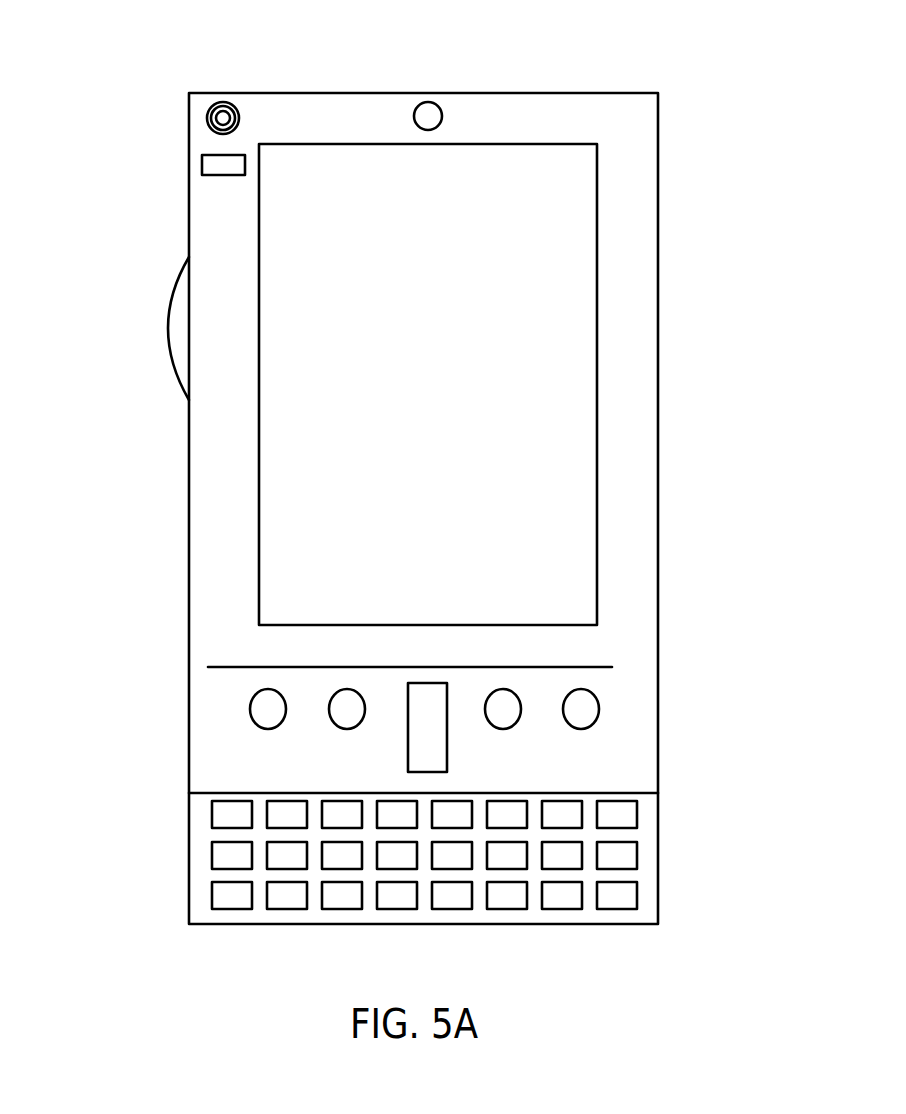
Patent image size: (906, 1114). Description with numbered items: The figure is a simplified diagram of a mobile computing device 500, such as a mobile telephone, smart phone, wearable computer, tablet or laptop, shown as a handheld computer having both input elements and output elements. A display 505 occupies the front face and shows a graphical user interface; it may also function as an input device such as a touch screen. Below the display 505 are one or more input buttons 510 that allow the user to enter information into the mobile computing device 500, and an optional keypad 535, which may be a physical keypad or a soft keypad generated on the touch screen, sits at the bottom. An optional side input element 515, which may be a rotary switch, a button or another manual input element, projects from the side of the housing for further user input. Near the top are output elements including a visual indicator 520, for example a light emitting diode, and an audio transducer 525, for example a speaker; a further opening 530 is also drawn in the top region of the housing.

The mobile computing device 500 is at (645, 110).
The display 505 is at (363, 543).
The input buttons 510 is at (425, 733).
The side input element 515 is at (178, 327).
The visual indicator 520 is at (203, 167).
The audio transducer 525 is at (198, 118).
The speaker 530 is at (441, 113).
The keypad 535 is at (200, 900).